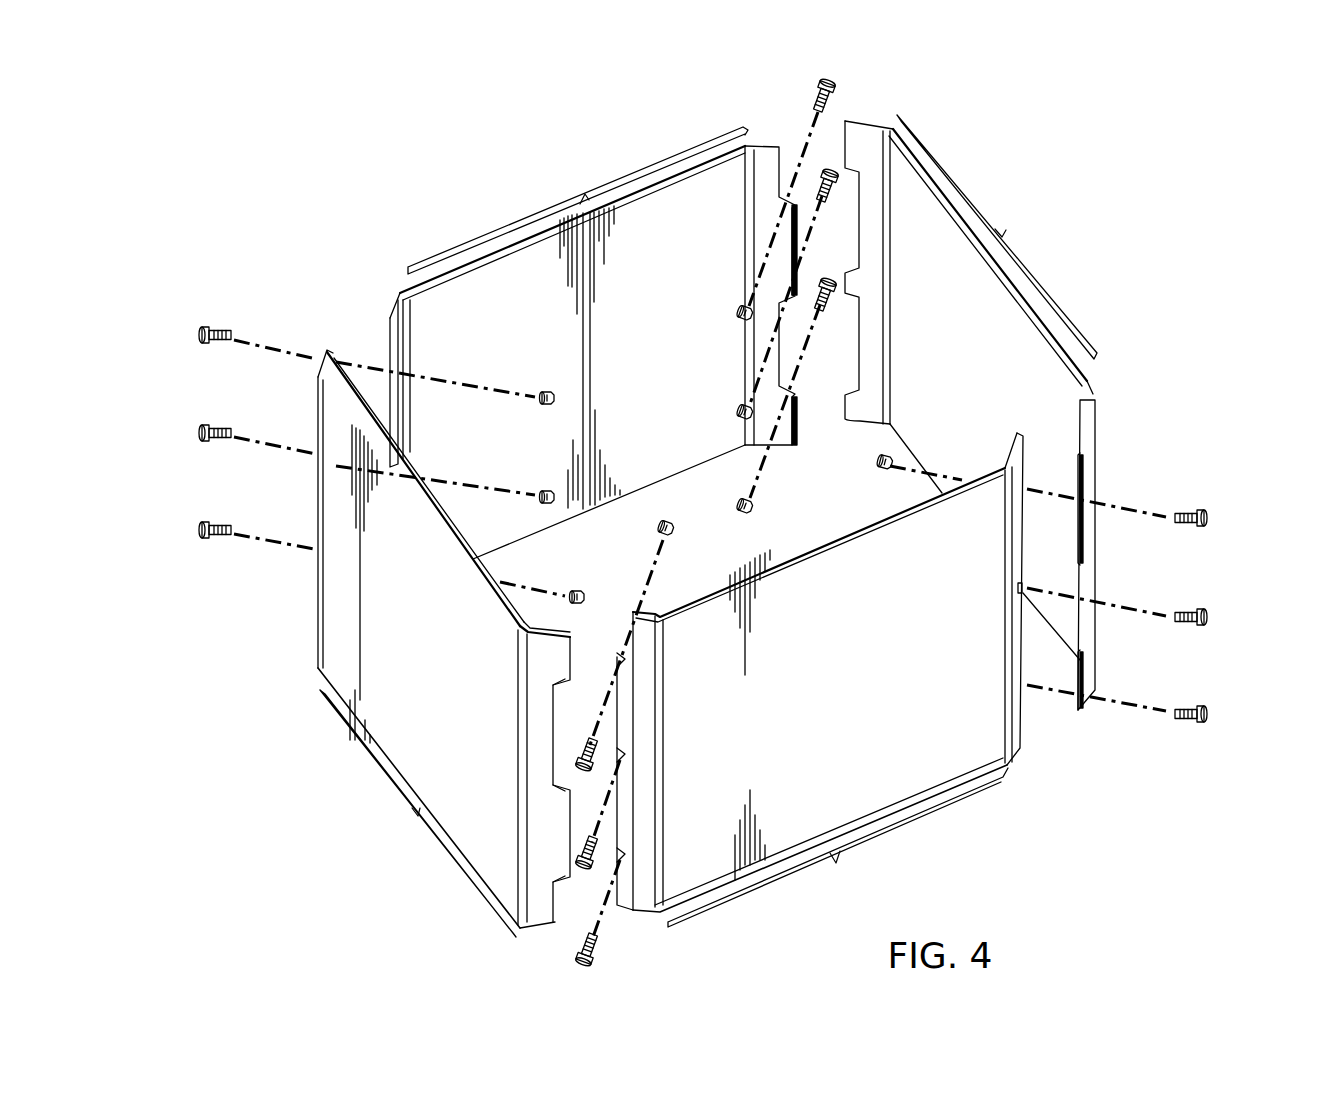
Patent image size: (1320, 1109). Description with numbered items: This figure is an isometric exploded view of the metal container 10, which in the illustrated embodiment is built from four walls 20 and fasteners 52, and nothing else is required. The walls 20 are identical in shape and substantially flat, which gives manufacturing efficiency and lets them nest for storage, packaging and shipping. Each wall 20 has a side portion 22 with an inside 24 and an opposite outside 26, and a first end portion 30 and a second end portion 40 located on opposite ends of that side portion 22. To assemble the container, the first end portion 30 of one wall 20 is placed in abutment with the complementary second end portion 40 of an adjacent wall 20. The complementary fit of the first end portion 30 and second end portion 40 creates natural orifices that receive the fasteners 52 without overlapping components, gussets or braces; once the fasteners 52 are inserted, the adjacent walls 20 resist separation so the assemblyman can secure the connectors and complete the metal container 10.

The metal container 10 is at (424, 142).
The wall 20 is at (318, 606).
The side portion 22 is at (583, 196).
The inside 24 is at (614, 360).
The outside 26 is at (400, 669).
The first end portion 30 is at (760, 142).
The second end portion 40 is at (388, 333).
The fastener 52 is at (196, 332).